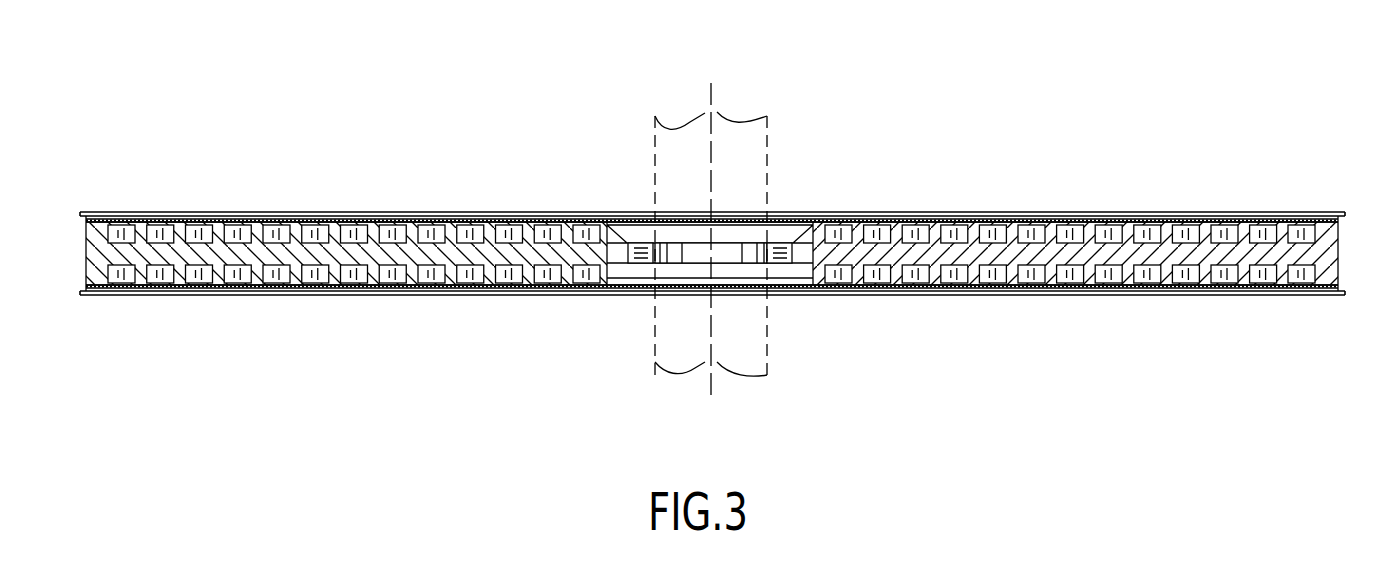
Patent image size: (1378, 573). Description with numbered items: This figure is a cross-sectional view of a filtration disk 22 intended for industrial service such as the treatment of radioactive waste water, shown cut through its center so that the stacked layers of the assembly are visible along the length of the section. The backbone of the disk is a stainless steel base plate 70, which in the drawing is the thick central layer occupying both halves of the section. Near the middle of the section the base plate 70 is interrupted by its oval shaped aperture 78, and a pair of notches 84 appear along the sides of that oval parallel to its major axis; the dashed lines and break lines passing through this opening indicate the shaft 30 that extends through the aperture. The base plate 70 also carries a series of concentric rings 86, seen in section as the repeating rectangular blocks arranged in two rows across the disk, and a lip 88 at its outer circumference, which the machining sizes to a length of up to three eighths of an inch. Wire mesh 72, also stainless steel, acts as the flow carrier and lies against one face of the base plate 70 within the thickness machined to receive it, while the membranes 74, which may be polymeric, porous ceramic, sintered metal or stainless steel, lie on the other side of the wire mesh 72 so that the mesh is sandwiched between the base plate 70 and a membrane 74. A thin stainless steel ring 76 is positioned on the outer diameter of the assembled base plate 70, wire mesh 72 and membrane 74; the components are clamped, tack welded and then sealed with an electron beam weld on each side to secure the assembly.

The filtration disk 22 is at (705, 220).
The shaft 30 is at (760, 342).
The base plate 70 is at (912, 245).
The wire mesh 72 is at (500, 222).
The membranes 74 is at (318, 214).
The ring 76 is at (1325, 212).
The oval shaped aperture 78 is at (735, 245).
The notches 84 is at (640, 248).
The concentric rings 86 is at (372, 232).
The lip 88 is at (103, 214).